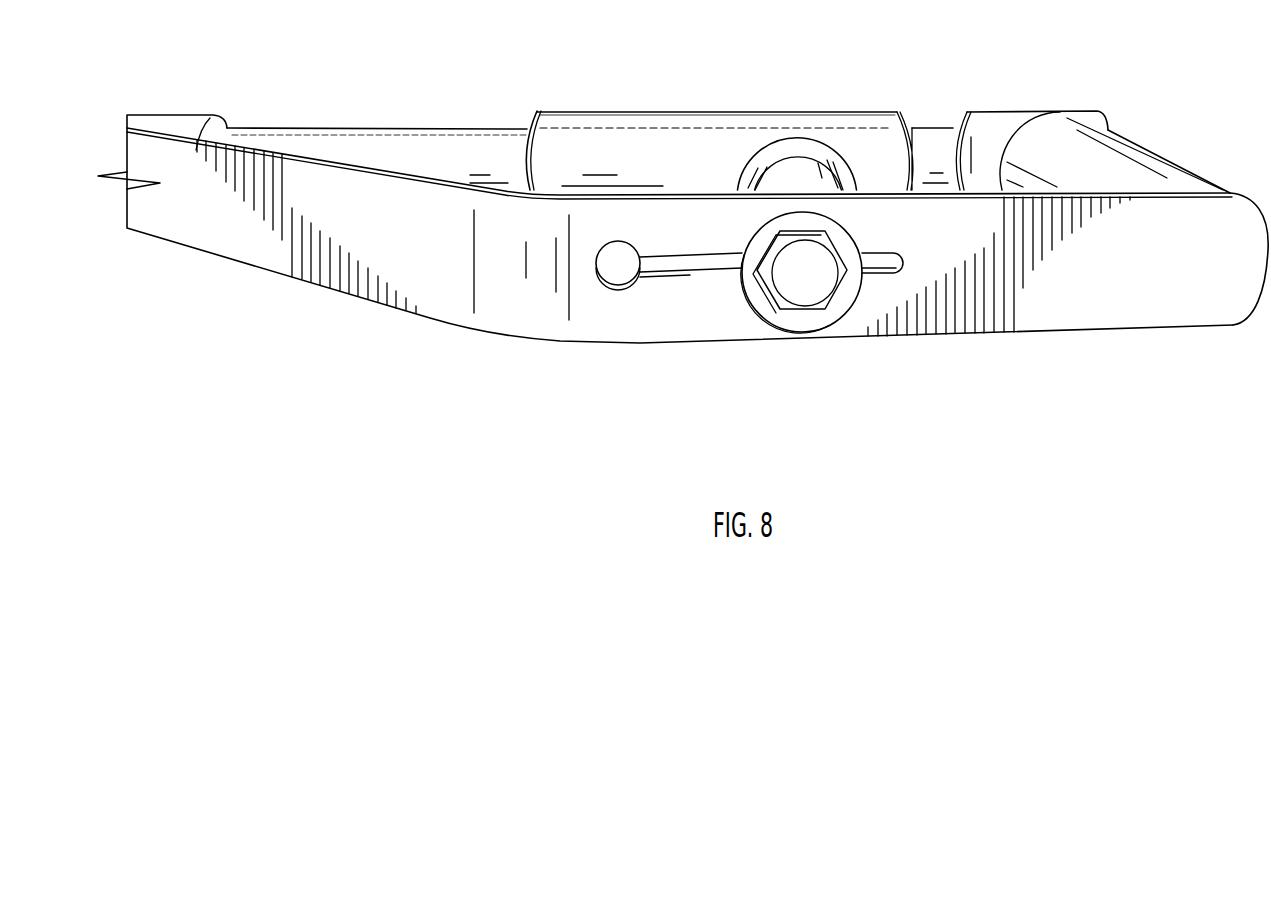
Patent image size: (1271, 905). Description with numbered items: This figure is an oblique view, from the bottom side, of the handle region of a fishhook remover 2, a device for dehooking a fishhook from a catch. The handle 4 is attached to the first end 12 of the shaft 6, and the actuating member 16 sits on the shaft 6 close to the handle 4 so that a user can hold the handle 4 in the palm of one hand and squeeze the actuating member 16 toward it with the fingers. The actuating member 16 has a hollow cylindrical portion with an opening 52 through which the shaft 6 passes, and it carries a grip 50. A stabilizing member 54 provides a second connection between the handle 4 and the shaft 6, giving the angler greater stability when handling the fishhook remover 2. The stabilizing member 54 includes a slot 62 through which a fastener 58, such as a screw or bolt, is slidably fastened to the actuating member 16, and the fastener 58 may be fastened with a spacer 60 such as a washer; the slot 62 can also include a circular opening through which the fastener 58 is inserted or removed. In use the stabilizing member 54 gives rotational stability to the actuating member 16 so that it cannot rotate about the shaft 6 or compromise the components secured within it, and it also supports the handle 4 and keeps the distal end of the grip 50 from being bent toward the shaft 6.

The fishhook remover 2 is at (352, 74).
The handle 4 is at (1107, 157).
The shaft 6 is at (468, 152).
The first end 12 is at (1083, 110).
The actuating member 16 is at (756, 92).
The grip 50 is at (803, 152).
The opening 52 is at (519, 124).
The stabilizing member 54 is at (246, 235).
The fastener 58 is at (798, 293).
The spacer 60 is at (687, 272).
The slot 62 is at (615, 270).